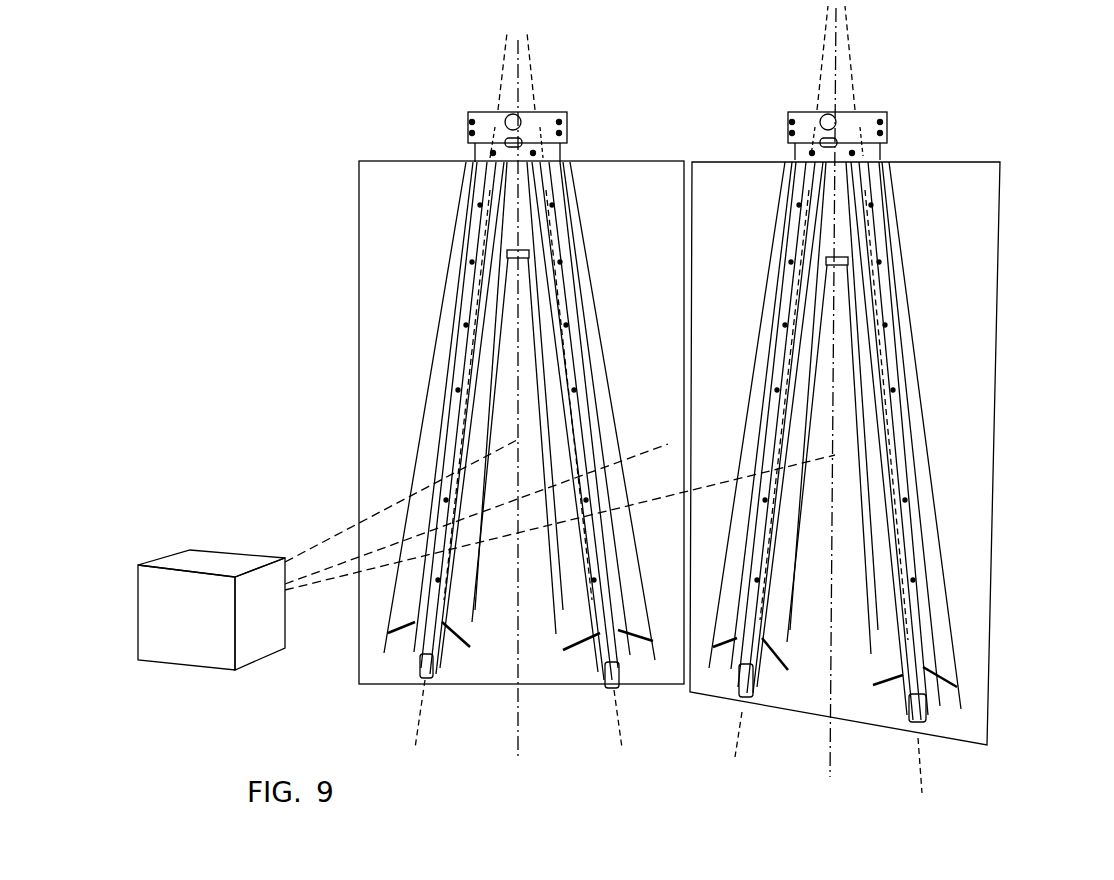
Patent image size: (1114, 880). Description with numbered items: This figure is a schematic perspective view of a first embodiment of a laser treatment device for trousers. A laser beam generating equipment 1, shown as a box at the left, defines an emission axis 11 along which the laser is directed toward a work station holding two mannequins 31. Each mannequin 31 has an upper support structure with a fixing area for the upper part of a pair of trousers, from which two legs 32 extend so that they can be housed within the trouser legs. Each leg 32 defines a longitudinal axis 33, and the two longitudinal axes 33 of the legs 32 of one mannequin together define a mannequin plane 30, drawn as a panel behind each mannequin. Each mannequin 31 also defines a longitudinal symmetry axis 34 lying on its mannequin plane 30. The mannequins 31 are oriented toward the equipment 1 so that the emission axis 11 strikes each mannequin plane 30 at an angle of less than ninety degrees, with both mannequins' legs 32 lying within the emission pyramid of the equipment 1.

The laser beam generating equipment 1 is at (205, 556).
The emission axis 11 is at (668, 440).
The mannequin plane 30 is at (393, 280).
The mannequin 31 is at (483, 133).
The leg 32 is at (567, 203).
The longitudinal axis 33 is at (528, 42).
The longitudinal symmetry axis 34 is at (517, 640).